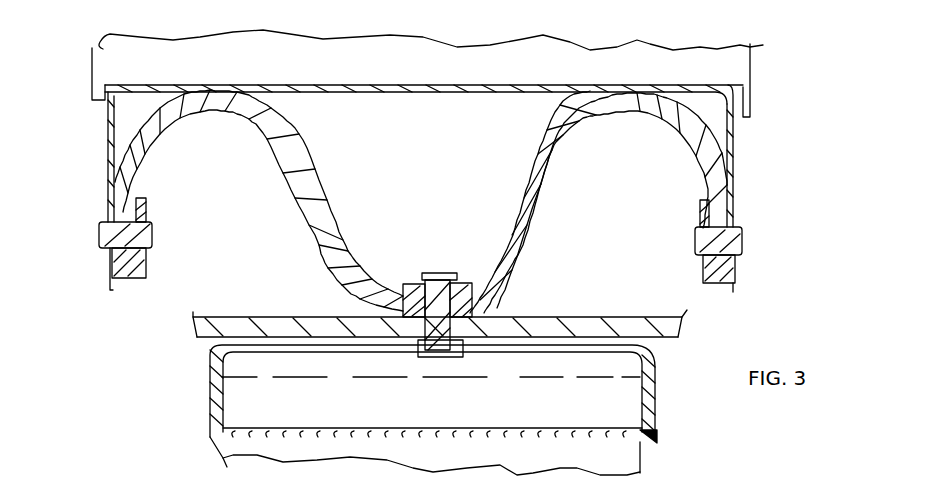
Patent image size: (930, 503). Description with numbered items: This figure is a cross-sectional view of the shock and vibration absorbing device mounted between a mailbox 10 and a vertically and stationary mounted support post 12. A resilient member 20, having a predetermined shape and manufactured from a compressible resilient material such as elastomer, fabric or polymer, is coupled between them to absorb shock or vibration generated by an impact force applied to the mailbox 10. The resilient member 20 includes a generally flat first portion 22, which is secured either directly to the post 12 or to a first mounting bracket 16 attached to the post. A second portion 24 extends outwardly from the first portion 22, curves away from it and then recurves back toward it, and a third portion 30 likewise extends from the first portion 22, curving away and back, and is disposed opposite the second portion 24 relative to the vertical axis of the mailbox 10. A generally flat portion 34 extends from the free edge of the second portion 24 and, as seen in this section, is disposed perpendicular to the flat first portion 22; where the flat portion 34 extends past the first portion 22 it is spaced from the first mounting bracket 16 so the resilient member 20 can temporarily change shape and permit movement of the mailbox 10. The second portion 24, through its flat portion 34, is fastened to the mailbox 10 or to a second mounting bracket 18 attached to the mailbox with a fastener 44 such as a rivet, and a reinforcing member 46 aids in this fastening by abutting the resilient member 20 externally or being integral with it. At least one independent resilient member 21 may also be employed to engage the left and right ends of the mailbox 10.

The mailbox 10 is at (727, 63).
The support post 12 is at (607, 448).
The first mounting bracket 16 is at (658, 390).
The second mounting bracket 18 is at (104, 157).
The resilient member 20 is at (101, 304).
The independent resilient member 21 is at (273, 323).
The first portion 22 is at (485, 292).
The second portion 24 is at (573, 129).
The third portion 30 is at (290, 158).
The flat portion 34 is at (736, 198).
The fastener 44 is at (435, 277).
The reinforcing member 46 is at (408, 282).